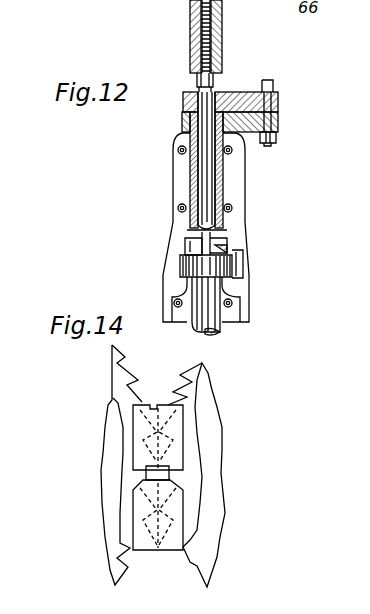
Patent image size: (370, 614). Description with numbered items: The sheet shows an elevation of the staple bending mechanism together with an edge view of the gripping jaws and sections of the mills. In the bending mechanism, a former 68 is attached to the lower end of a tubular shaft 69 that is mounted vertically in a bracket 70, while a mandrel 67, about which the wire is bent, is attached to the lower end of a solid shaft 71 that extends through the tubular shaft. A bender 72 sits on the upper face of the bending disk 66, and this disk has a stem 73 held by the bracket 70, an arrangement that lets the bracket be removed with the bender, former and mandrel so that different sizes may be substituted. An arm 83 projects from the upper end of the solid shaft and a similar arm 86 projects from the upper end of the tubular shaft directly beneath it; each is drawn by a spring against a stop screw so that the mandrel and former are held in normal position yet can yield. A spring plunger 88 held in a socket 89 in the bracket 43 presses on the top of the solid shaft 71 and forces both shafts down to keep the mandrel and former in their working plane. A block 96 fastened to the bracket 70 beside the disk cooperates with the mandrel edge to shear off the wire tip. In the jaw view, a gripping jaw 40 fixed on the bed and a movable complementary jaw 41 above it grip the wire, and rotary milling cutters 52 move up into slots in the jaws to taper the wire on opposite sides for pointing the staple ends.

In FIG. 14, the gripping jaw 40 is at (158, 550).
In FIG. 14, the complementary jaw 41 is at (158, 404).
In FIG. 12, the bracket 43 is at (222, 32).
In FIG. 14, the rotary milling cutters 52 is at (118, 391).
In FIG. 12, the bending disk 66 is at (233, 274).
In FIG. 12, the mandrel 67 is at (230, 245).
In FIG. 12, the former 68 is at (185, 245).
In FIG. 12, the tubular shaft 69 is at (215, 170).
In FIG. 12, the bracket 70 is at (245, 191).
In FIG. 12, the solid shaft 71 is at (205, 167).
In FIG. 12, the bender 72 is at (185, 265).
In FIG. 12, the stem 73 is at (218, 334).
In FIG. 12, the arm 83 is at (278, 97).
In FIG. 12, the arm 86 is at (278, 119).
In FIG. 12, the spring plunger 88 is at (215, 74).
In FIG. 12, the socket 89 is at (190, 33).
In FIG. 12, the block 96 is at (240, 266).